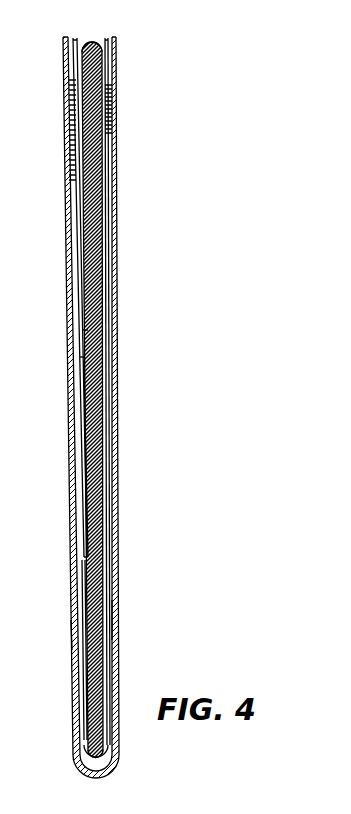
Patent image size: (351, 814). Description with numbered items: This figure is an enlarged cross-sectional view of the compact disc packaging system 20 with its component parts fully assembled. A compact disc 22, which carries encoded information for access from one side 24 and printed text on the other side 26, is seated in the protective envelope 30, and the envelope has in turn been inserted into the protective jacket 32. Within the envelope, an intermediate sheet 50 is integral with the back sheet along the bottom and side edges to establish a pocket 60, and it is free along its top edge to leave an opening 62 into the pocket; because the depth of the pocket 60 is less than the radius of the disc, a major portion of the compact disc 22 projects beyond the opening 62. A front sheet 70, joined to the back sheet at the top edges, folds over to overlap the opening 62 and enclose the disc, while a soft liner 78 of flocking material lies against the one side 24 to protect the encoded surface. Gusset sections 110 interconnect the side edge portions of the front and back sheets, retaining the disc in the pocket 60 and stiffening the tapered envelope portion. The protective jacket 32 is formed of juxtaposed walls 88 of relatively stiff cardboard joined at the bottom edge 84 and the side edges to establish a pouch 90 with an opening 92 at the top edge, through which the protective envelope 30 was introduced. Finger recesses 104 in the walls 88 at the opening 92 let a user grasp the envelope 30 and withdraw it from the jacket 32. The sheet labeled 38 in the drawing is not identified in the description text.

The compact disc packaging system 20 is at (118, 270).
The compact disc 22 is at (97, 80).
The one side 24 is at (113, 295).
The other side 26 is at (83, 293).
The protective envelope 30 is at (117, 183).
The protective jacket 32 is at (117, 147).
The lumen 38 is at (72, 633).
The intermediate sheet 50 is at (83, 177).
The pocket 60 is at (113, 211).
The opening 62 is at (76, 357).
The front sheet 70 is at (78, 420).
The liner 78 is at (83, 333).
The bottom edge 84 is at (96, 776).
The walls 88 is at (117, 622).
The pouch 90 is at (82, 225).
The opening 92 is at (100, 40).
The finger recesses 104 is at (72, 153).
The gusset sections 110 is at (85, 590).